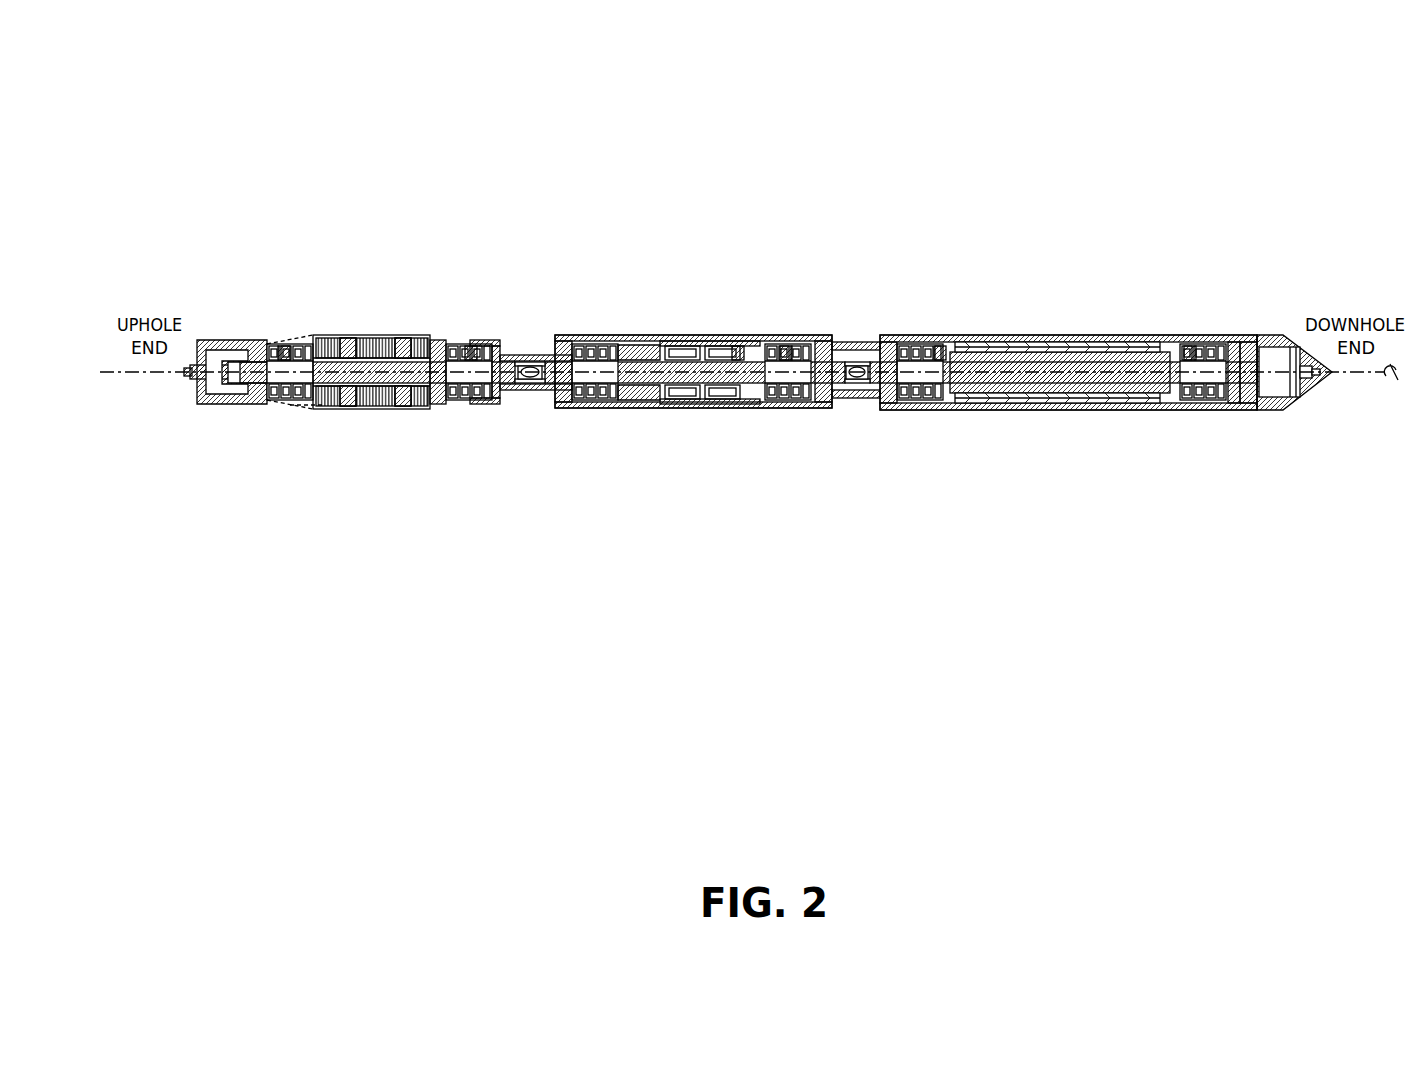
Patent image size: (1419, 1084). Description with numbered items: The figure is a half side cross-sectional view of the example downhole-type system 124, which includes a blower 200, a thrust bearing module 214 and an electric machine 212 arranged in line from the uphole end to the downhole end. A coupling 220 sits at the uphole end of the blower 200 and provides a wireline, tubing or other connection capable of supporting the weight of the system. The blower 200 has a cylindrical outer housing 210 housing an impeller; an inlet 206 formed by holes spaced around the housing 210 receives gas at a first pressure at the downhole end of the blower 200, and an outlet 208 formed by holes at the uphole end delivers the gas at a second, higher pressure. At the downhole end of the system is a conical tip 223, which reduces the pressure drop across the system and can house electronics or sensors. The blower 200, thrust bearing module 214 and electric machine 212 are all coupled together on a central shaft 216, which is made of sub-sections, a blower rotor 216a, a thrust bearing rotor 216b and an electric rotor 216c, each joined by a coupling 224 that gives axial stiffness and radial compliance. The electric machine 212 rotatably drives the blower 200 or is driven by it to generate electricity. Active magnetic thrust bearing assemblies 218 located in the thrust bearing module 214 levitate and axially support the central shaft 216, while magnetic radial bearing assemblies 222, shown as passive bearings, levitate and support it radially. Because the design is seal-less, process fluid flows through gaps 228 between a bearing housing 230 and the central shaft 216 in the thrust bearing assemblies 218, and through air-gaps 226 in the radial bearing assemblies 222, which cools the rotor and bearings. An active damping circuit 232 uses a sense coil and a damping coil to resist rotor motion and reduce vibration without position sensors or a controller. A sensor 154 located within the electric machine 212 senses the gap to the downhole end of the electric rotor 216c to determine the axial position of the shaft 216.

The blower 200 is at (373, 202).
The downhole-type system 124 is at (1232, 585).
The sensor 154 is at (1260, 398).
The inlet 206 is at (430, 400).
The outlet 208 is at (303, 407).
The cylindrical outer housing 210 is at (350, 410).
The electric machine 212 is at (1097, 262).
The thrust bearing module 214 is at (702, 262).
The central shaft 216 is at (436, 342).
The blower rotor 216a is at (370, 378).
The thrust bearing rotor 216b is at (655, 378).
The electric rotor 216c is at (1050, 378).
The active magnetic thrust bearing assemblies 218 is at (745, 395).
The coupling 220 is at (190, 377).
The magnetic radial bearing assemblies 222 is at (285, 345).
The conical tip 223 is at (1295, 405).
The coupling 224 is at (530, 400).
The gaps 226 is at (280, 400).
The gaps 228 is at (660, 362).
The bearing housing 230 is at (283, 334).
The active damping circuit 232 is at (1222, 340).